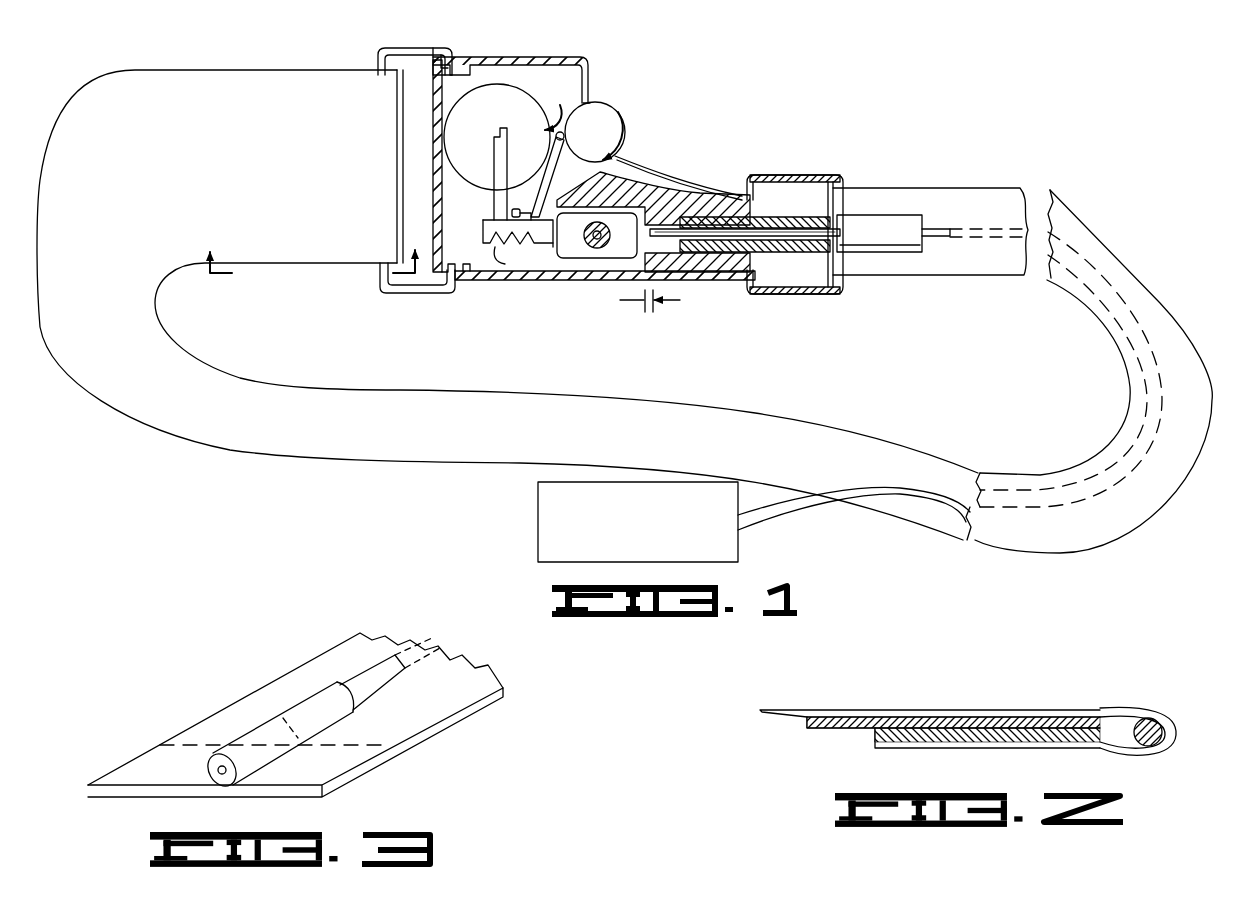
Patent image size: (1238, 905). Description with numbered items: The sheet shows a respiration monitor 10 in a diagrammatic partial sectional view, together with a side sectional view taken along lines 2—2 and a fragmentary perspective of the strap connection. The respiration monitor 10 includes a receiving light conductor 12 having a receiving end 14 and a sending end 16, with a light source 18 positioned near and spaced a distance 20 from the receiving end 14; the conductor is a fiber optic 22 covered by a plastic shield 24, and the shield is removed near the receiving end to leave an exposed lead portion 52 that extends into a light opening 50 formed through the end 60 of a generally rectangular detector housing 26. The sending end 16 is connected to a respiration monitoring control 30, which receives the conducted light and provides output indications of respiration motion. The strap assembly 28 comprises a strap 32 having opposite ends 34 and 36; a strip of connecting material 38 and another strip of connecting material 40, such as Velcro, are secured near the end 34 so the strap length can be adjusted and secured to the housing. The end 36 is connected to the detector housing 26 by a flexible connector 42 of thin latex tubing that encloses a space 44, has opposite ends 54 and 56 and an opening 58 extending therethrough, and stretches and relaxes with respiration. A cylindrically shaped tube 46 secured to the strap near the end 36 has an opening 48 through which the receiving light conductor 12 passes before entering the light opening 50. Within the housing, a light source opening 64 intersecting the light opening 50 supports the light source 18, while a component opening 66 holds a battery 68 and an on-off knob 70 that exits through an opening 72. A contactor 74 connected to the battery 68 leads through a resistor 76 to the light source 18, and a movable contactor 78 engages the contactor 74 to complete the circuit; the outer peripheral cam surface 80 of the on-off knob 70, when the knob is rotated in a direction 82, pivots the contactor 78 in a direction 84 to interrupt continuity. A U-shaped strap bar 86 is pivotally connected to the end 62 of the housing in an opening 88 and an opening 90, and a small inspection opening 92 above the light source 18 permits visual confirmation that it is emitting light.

In FIG. 1, the respiration monitor 10 is at (727, 98).
In FIG. 1, the receiving light conductor 12 is at (787, 235).
In FIG. 3, the receiving light conductor 12 is at (377, 677).
In FIG. 1, the receiving end 14 is at (660, 222).
In FIG. 1, the sending end 16 is at (740, 533).
In FIG. 1, the light source 18 is at (577, 250).
In FIG. 1, the distance 20 is at (665, 303).
In FIG. 1, the fiber optic 22 is at (690, 253).
In FIG. 1, the plastic shield 24 is at (797, 262).
In FIG. 1, the detector housing 26 is at (645, 165).
In FIG. 1, the strap assembly 28 is at (1097, 223).
In FIG. 1, the respiration monitoring control 30 is at (537, 512).
In FIG. 1, the strap 32 is at (1135, 275).
In FIG. 3, the strap 32 is at (260, 690).
In FIG. 2, the strap 32 is at (957, 710).
In FIG. 1, the end 34 is at (410, 48).
In FIG. 1, the end 36 is at (830, 187).
In FIG. 3, the end 36 is at (305, 793).
In FIG. 2, the end 36 is at (1160, 712).
In FIG. 2, the connecting material 38 is at (907, 737).
In FIG. 2, the connecting material 40 is at (1017, 728).
In FIG. 1, the flexible connector 42 is at (840, 300).
In FIG. 1, the space 44 is at (797, 265).
In FIG. 1, the tube 46 is at (893, 227).
In FIG. 3, the tube 46 is at (317, 700).
In FIG. 3, the opening 48 is at (213, 777).
In FIG. 1, the light opening 50 is at (680, 210).
In FIG. 1, the exposed lead portion 52 is at (653, 243).
In FIG. 1, the end 54 is at (740, 303).
In FIG. 1, the end 56 is at (840, 297).
In FIG. 1, the opening 58 is at (760, 297).
In FIG. 1, the end 60 is at (753, 197).
In FIG. 1, the end 62 is at (437, 120).
In FIG. 1, the light source opening 64 is at (530, 263).
In FIG. 1, the component opening 66 is at (488, 60).
In FIG. 1, the battery 68 is at (457, 133).
In FIG. 1, the on-off knob 70 is at (600, 120).
In FIG. 1, the opening 72 is at (582, 105).
In FIG. 1, the contactor 74 is at (547, 165).
In FIG. 1, the resistor 76 is at (498, 257).
In FIG. 1, the contactor 78 is at (540, 160).
In FIG. 1, the cam surface 80 is at (500, 172).
In FIG. 1, the direction 82 is at (625, 140).
In FIG. 1, the direction 84 is at (557, 110).
In FIG. 1, the strap bar 86 is at (386, 290).
In FIG. 1, the opening 88 is at (430, 52).
In FIG. 1, the opening 90 is at (447, 290).
In FIG. 1, the inspection opening 92 is at (600, 247).
In FIG. 1, the section line 2— 2 is at (310, 248).